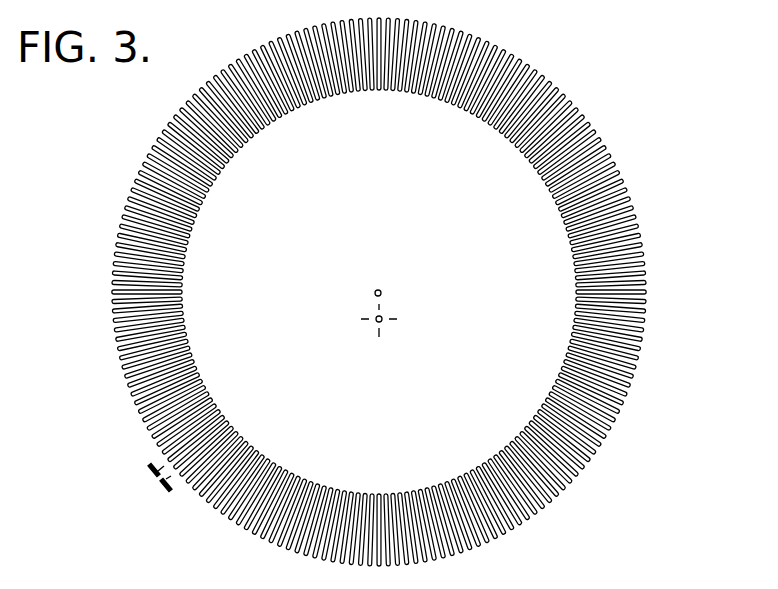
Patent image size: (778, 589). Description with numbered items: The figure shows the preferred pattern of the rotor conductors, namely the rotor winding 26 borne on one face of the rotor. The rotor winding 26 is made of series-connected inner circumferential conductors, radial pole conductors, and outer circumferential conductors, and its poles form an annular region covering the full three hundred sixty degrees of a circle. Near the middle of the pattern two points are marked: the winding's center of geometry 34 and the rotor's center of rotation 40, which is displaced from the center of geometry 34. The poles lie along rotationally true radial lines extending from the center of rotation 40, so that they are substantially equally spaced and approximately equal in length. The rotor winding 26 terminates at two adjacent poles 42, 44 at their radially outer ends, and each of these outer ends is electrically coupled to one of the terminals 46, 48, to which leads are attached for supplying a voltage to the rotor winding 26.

The rotor winding 26 is at (641, 221).
The center of geometry 34 is at (374, 291).
The center of rotation 40 is at (377, 323).
The pole 42 is at (163, 466).
The pole 44 is at (171, 478).
The terminal 46 is at (147, 471).
The terminal 48 is at (162, 488).